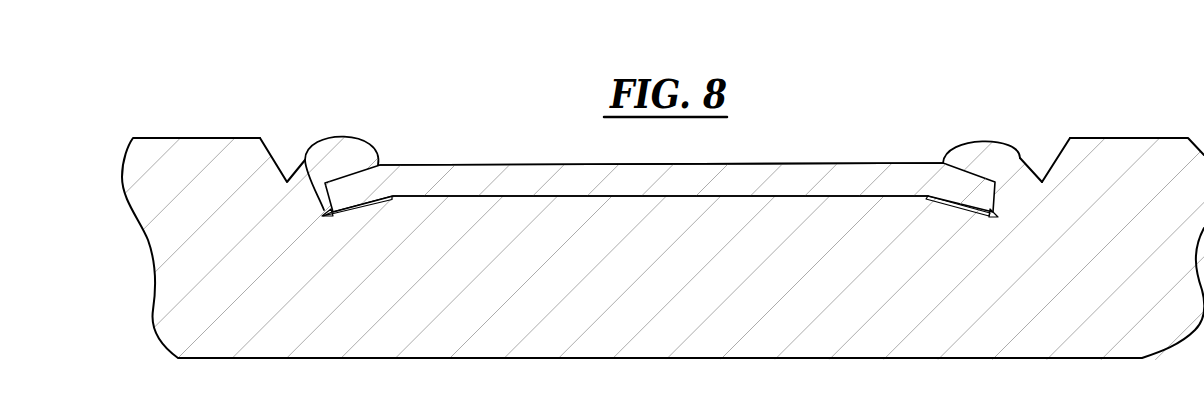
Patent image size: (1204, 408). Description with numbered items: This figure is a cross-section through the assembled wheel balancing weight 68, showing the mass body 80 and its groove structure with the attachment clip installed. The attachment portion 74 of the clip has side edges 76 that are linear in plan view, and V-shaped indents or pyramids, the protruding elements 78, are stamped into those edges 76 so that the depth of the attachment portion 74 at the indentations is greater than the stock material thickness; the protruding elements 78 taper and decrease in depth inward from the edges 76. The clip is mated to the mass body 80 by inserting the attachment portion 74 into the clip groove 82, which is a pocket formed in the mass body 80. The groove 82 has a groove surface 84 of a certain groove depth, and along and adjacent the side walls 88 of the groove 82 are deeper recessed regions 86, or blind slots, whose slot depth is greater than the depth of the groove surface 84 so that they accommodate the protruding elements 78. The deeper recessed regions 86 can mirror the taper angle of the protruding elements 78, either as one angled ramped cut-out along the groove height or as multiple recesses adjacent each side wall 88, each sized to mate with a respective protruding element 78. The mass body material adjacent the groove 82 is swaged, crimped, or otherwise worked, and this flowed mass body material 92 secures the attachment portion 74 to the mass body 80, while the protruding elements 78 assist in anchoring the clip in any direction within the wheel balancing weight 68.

The wheel balancing weight 68 is at (782, 80).
The attachment portion 74 is at (573, 152).
The side edges 76 is at (996, 194).
The protruding elements 78 is at (353, 193).
The mass body 80 is at (1128, 178).
The clip groove 82 is at (776, 185).
The groove surface 84 is at (518, 183).
The deeper recessed regions 86 is at (303, 160).
The side walls 88 is at (323, 212).
The flowed mass body material 92 is at (349, 156).